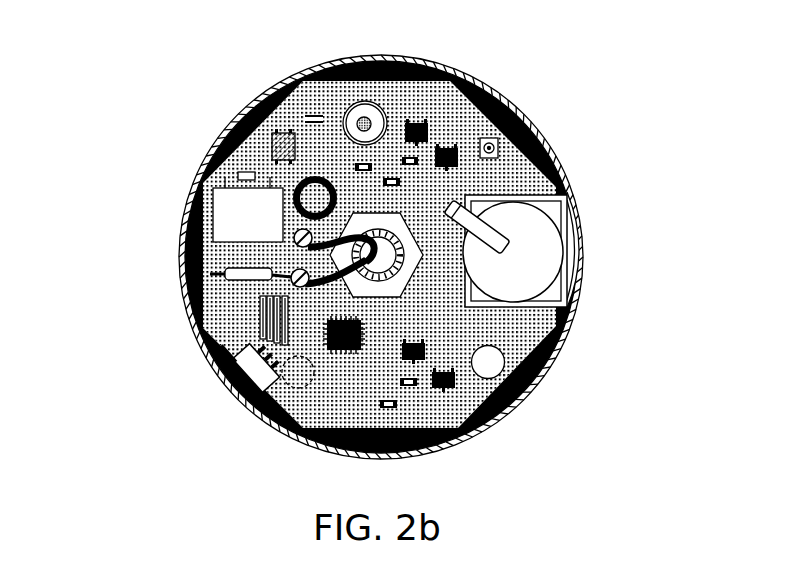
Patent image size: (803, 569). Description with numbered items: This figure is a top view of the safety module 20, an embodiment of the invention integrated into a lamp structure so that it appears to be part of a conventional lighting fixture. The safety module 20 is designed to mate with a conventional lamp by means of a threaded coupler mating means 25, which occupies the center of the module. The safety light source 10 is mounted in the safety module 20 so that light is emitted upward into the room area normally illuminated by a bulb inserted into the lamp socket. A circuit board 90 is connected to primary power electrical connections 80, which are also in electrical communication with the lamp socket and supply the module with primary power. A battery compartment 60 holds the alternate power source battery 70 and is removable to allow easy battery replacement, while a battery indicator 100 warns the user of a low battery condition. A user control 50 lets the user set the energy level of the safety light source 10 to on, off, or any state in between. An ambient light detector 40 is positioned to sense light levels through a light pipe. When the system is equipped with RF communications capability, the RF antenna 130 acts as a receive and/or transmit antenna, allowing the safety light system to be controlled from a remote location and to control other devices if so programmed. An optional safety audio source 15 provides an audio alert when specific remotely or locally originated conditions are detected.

The safety light source 10 is at (488, 360).
The safety audio source 15 is at (367, 117).
The safety module 20 is at (204, 157).
The threaded coupler mating means 25 is at (398, 228).
The ambient light detector 40 is at (295, 383).
The user control 50 is at (217, 390).
The battery compartment 60 is at (577, 238).
The battery 70 is at (532, 243).
The primary power electrical connections 80 is at (292, 240).
The circuit board 90 is at (235, 292).
The battery indicator 100 is at (515, 115).
The RF antenna 130 is at (253, 322).